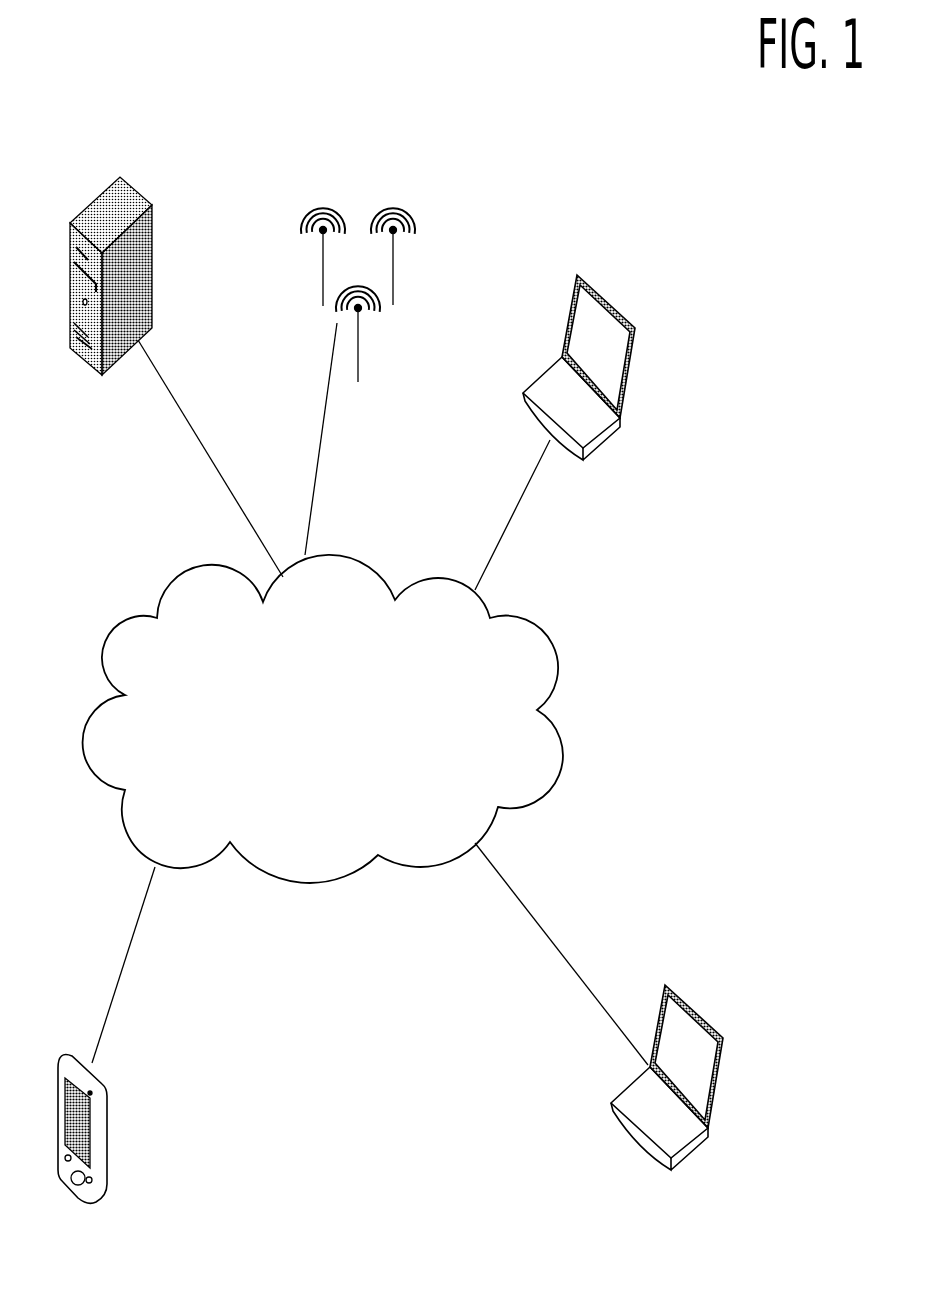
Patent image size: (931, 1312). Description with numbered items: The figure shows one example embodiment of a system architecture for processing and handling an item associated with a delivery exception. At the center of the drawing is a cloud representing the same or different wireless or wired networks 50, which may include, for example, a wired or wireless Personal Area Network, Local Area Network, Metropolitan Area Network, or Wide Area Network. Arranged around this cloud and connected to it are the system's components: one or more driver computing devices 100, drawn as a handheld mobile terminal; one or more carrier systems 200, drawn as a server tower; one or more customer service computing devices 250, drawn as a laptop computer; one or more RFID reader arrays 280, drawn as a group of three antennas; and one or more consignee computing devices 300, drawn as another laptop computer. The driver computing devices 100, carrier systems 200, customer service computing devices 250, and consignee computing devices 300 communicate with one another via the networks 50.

The wireless or wired networks 50 is at (323, 883).
The driver computing devices 100 is at (107, 1080).
The carrier systems 200 is at (147, 200).
The customer service computing devices 250 is at (638, 325).
The RFID reader arrays 280 is at (365, 203).
The consignee computing devices 300 is at (725, 1037).